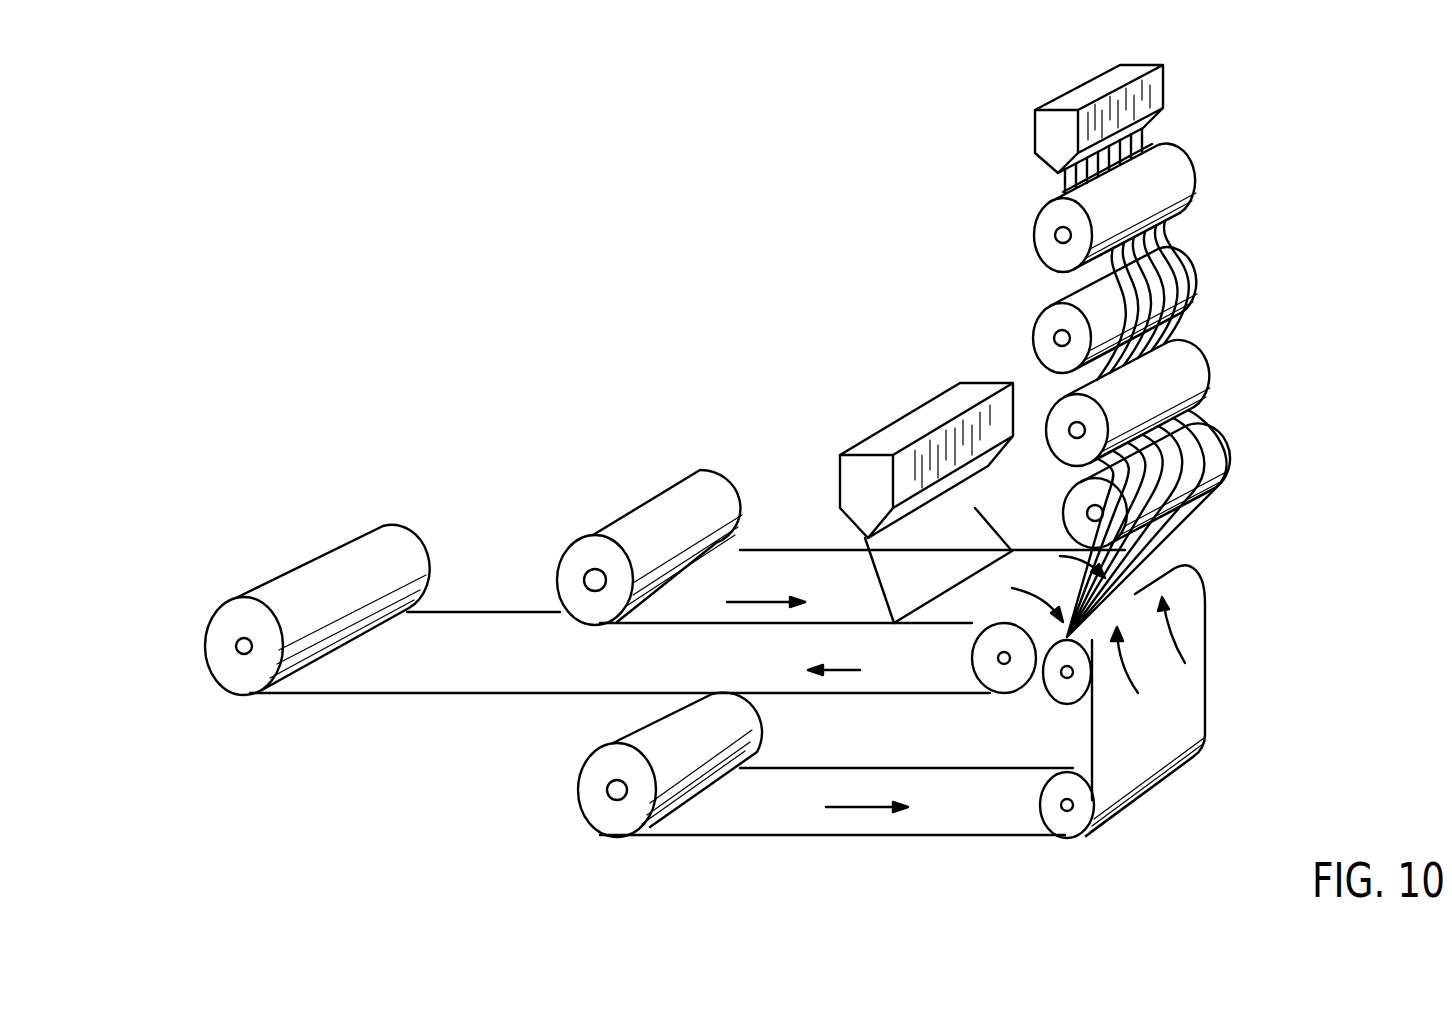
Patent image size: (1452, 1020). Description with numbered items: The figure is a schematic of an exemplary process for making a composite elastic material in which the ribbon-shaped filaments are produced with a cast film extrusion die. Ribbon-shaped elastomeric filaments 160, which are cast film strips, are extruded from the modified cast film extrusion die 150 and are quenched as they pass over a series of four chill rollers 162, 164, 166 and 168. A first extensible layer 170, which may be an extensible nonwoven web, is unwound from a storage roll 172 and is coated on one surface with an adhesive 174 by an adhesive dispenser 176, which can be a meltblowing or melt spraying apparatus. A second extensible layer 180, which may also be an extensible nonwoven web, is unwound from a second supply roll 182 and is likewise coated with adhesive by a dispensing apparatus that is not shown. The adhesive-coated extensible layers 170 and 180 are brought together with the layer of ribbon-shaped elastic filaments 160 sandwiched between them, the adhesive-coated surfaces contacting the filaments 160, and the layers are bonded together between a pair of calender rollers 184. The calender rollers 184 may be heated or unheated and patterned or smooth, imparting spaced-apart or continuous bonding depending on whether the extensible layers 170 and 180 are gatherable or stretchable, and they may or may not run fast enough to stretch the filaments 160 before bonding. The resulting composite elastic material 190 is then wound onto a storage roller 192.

The modified cast film extrusion die 150 is at (1157, 90).
The ribbon-shaped elastomeric filaments 160 is at (1140, 140).
The chill roller 162 is at (1187, 173).
The chill roller 164 is at (1190, 268).
The chill roller 166 is at (1197, 363).
The chill roller 168 is at (1220, 450).
The first extensible layer 170 is at (768, 573).
The storage roll 172 is at (590, 558).
The adhesive 174 is at (975, 511).
The adhesive dispenser 176 is at (998, 407).
The second extensible layer 180 is at (740, 833).
The second supply roll 182 is at (590, 808).
The calender rollers 184 is at (1060, 693).
The composite elastic material 190 is at (467, 678).
The storage roller 192 is at (220, 638).